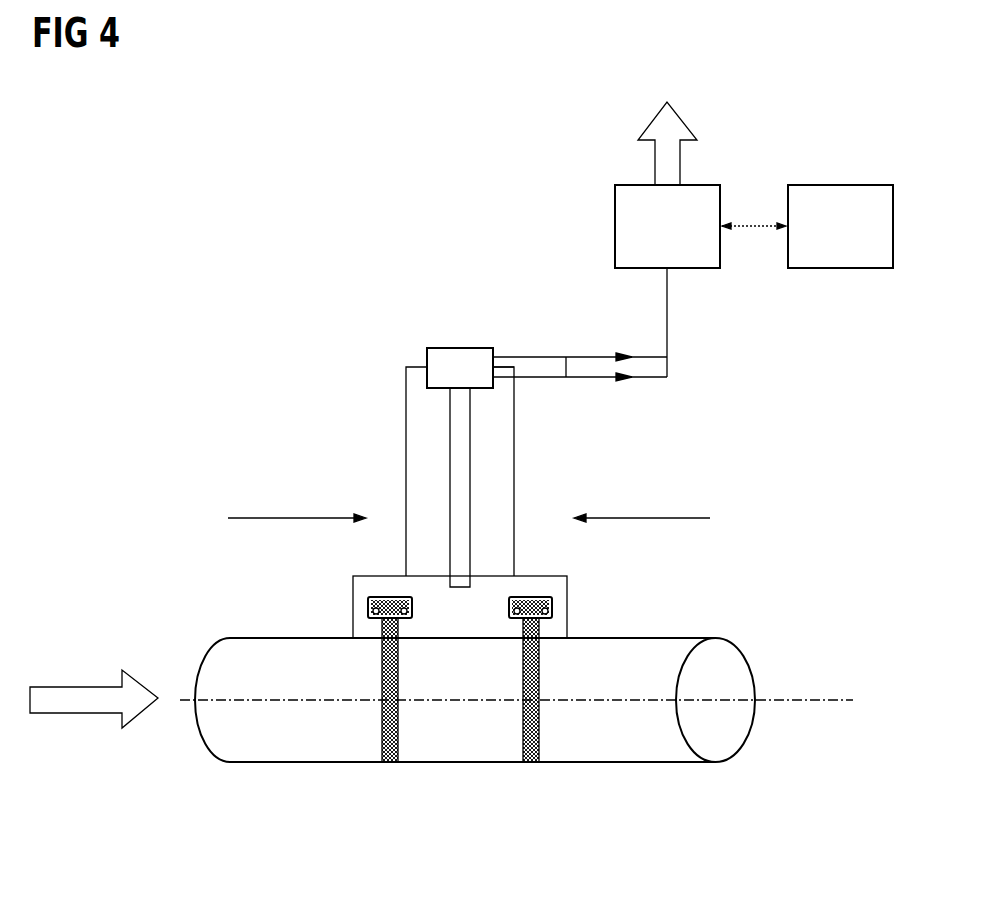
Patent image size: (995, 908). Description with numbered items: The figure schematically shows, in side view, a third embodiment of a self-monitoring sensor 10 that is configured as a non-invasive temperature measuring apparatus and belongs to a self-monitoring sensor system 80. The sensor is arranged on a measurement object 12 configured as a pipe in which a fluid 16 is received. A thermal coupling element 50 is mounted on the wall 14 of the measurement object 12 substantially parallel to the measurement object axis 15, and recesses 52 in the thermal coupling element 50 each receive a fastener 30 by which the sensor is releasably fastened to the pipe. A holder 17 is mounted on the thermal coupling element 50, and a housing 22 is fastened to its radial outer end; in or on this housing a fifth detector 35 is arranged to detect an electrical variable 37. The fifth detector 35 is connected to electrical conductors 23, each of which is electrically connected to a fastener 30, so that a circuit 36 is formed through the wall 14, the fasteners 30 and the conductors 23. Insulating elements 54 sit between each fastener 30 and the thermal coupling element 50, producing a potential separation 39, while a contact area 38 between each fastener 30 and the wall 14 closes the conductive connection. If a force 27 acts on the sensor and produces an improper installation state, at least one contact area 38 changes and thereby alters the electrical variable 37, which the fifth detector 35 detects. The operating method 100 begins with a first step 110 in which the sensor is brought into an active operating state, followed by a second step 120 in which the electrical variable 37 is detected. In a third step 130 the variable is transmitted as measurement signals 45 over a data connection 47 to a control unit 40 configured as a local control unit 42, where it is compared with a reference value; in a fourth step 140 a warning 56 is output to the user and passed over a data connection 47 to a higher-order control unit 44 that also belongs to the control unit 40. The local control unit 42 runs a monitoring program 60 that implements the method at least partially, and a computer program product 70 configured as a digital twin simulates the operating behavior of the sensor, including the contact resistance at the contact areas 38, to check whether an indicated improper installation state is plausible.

The computer program product 70 is at (461, 467).
The self-monitoring sensor system 80 is at (461, 467).
The operating method 100 is at (461, 467).
The first step 110 is at (247, 126).
The third step 130 is at (657, 241).
The warning 56 is at (657, 241).
The fourth step 140 is at (657, 241).
The data connection 47 is at (657, 241).
The control unit 40 is at (655, 157).
The local control unit 42 is at (571, 226).
The monitoring program 60 is at (615, 226).
The higher-order control unit 44 is at (838, 185).
The measurement signals 45 is at (593, 357).
The self-monitoring sensor 10 is at (470, 468).
The electrical conductors 23 is at (406, 430).
The housing 22 is at (493, 350).
The holder 17 is at (450, 470).
The electrical variable 37 is at (477, 558).
The fifth detector 35 is at (453, 333).
The second step 120 is at (448, 348).
The fastener 30 is at (390, 762).
The contact area 38 is at (382, 715).
The circuit 36 is at (540, 665).
The thermal coupling element 50 is at (537, 576).
The recesses 52 is at (368, 605).
The potential separation 39 is at (457, 615).
The insulating elements 54 is at (368, 610).
The measurement object 12 is at (475, 736).
The wall 14 is at (282, 748).
The measurement object axis 15 is at (841, 705).
The fluid 16 is at (76, 687).
The force 27 is at (282, 518).